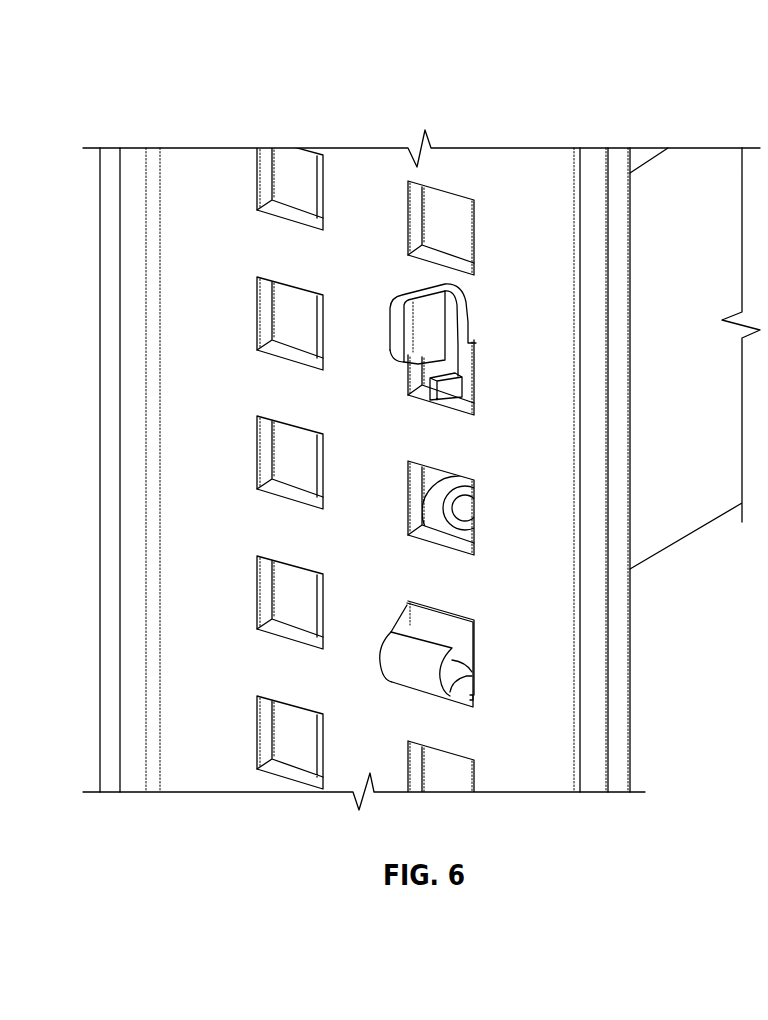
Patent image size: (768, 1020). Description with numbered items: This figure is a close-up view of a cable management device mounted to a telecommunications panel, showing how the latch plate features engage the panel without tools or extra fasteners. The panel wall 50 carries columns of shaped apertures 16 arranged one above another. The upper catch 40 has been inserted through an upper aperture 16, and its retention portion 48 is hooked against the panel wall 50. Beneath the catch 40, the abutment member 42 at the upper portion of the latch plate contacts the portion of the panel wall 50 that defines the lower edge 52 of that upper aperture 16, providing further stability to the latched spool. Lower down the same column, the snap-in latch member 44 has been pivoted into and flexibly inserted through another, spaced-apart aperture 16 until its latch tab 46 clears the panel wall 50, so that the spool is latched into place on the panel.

The shaped aperture 16 is at (287, 180).
The catch 40 is at (429, 362).
The abutment member 42 is at (463, 393).
The snap-in latch member 44 is at (447, 655).
The latch tab 46 is at (472, 702).
The retention portion 48 is at (396, 313).
The panel wall 50 is at (198, 762).
The lower edge 52 is at (423, 392).